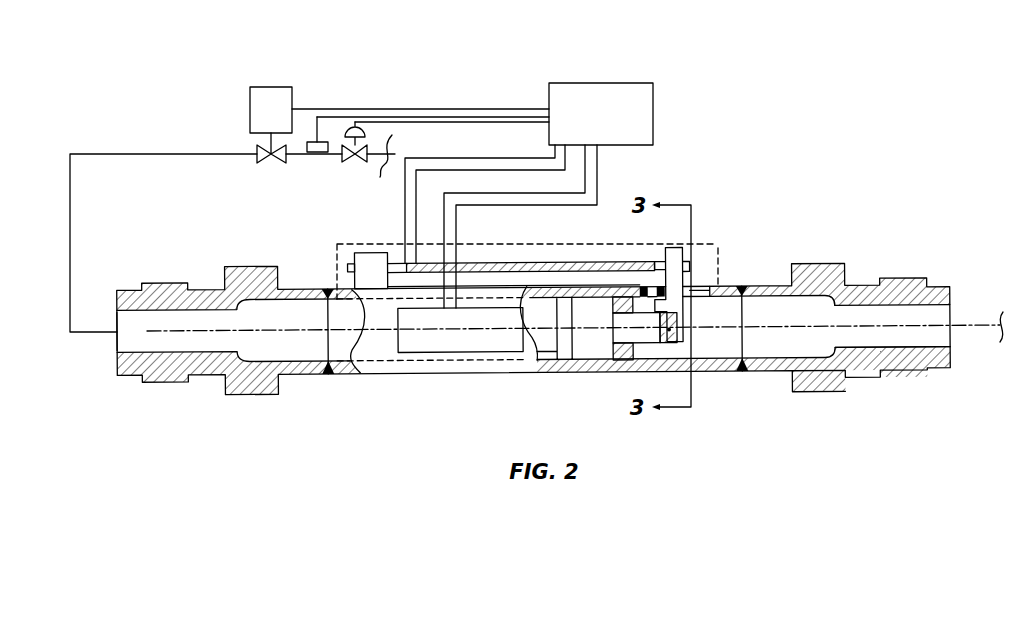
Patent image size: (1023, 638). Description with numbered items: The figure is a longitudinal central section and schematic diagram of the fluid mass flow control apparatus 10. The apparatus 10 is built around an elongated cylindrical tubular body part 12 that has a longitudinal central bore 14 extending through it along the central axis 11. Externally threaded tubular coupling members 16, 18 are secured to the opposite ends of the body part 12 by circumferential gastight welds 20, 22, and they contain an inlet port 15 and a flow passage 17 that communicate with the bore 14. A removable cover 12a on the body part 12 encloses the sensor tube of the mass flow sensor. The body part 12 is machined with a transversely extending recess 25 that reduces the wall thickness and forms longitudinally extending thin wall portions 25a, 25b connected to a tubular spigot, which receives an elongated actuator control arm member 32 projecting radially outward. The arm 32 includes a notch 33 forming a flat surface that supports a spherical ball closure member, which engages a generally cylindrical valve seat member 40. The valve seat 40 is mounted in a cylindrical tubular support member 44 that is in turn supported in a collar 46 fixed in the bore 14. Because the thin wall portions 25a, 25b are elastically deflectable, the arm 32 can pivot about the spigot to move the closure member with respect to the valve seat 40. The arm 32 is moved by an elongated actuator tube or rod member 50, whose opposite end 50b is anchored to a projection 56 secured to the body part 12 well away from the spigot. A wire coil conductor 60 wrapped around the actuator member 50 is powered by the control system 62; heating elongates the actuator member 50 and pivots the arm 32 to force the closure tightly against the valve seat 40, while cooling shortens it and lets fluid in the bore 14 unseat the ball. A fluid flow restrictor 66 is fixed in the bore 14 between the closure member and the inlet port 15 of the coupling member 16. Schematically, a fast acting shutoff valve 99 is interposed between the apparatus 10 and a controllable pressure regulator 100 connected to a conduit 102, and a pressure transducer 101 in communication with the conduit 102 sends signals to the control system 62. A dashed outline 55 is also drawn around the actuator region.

The fluid mass flow control apparatus 10 is at (818, 159).
The central axis 11 is at (203, 330).
The tubular body part 12 is at (547, 373).
The removable cover 12a is at (453, 352).
The bore 14 is at (694, 358).
The inlet port 15 is at (128, 353).
The coupling member 16 is at (160, 382).
The flow passage 17 is at (932, 347).
The coupling member 18 is at (903, 378).
The circumferential weld 20 is at (328, 375).
The circumferential weld 22 is at (742, 283).
The recess 25 is at (708, 287).
The thin wall portion 25a is at (652, 288).
The thin wall portion 25b is at (702, 287).
The actuator control arm member 32 is at (677, 248).
The notch 33 is at (656, 318).
The valve seat member 40 is at (663, 344).
The tubular support member 44 is at (650, 287).
The collar 46 is at (622, 360).
The actuator member 50 is at (475, 262).
The end of actuator member 50b is at (395, 287).
The housing 55 is at (718, 250).
The projection 56 is at (357, 253).
The wire coil conductor 60 is at (438, 352).
The control system 62 is at (598, 83).
The fluid flow restrictor 66 is at (540, 354).
The fast acting shutoff valve 99 is at (263, 163).
The controllable pressure regulator 100 is at (344, 135).
The pressure transducer 101 is at (313, 140).
The conduit 102 is at (380, 157).